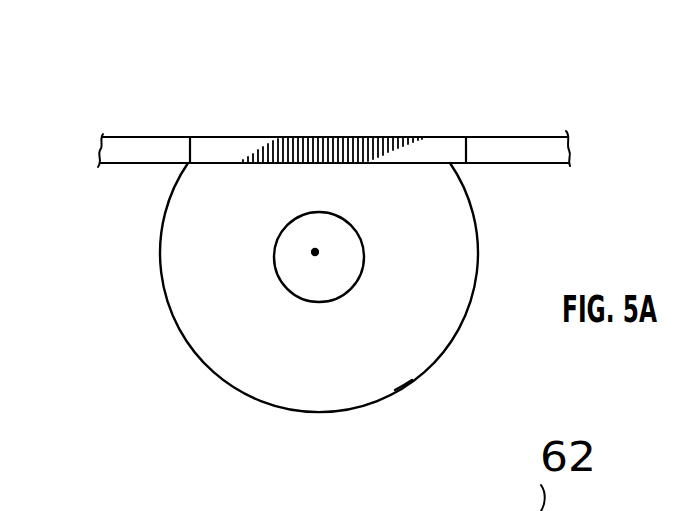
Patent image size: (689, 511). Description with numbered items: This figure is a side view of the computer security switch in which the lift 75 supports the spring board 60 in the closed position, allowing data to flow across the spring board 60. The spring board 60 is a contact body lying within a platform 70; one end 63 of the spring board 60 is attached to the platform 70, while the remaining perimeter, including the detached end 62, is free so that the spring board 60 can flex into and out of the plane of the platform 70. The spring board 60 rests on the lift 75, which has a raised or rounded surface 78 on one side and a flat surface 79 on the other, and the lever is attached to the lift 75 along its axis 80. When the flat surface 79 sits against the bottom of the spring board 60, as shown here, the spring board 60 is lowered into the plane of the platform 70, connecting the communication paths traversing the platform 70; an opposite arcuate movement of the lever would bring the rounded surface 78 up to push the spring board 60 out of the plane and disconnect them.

The platform 70 is at (100, 153).
The detached end 62 is at (190, 137).
The attached end 63 is at (465, 137).
The spring board 60 is at (257, 143).
The lift 75 is at (223, 348).
The raised or rounded surface 78 is at (403, 385).
The flat surface 79 is at (365, 163).
The axis 80 is at (318, 257).